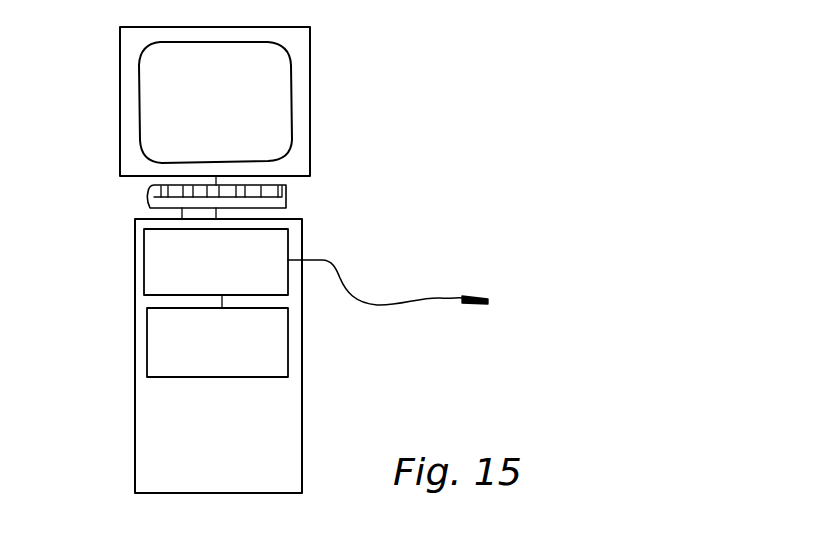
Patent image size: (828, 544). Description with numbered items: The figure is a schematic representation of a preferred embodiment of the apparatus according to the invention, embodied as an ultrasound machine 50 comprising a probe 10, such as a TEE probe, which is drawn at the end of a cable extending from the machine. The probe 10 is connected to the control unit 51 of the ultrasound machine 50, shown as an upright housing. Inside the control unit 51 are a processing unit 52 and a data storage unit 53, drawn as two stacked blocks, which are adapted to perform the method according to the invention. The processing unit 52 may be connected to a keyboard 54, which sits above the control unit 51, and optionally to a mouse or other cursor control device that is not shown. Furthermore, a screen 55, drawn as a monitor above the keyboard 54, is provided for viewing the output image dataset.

The probe 10 is at (480, 306).
The ultrasound machine 50 is at (463, 113).
The control unit 51 is at (262, 342).
The processing unit 52 is at (224, 277).
The data storage unit 53 is at (224, 357).
The keyboard 54 is at (148, 197).
The screen 55 is at (120, 106).